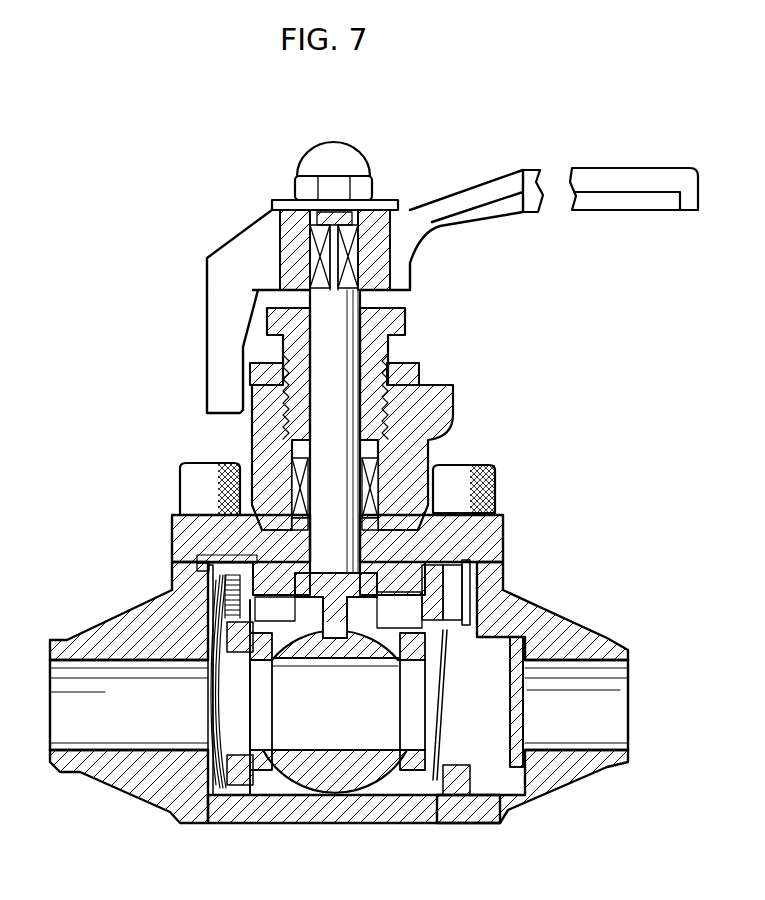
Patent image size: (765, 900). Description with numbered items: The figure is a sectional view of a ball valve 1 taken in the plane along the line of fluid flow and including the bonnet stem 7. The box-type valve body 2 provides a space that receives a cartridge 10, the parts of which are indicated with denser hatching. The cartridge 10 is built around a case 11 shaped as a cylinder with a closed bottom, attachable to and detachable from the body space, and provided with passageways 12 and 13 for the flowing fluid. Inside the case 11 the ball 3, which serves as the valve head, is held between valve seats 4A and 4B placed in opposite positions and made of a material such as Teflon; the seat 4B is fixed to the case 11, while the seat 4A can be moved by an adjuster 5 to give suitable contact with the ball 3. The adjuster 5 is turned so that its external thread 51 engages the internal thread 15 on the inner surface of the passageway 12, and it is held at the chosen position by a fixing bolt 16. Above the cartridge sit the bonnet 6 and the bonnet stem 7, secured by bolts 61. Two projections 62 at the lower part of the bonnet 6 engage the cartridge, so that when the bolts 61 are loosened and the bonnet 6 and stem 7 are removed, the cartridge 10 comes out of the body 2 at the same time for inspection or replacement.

The ball valve 1 is at (552, 455).
The valve body 2 is at (137, 785).
The ball 3 is at (328, 750).
The valve seat 4A is at (217, 695).
The valve seat 4B is at (412, 655).
The adjuster 5 is at (213, 727).
The bonnet 6 is at (495, 525).
The bonnet stem 7 is at (333, 303).
The cartridge 10 is at (400, 705).
The case 11 is at (447, 603).
The passageway 12 is at (237, 712).
The passageway 13 is at (435, 702).
The internal thread 15 is at (207, 663).
The fixing bolt 16 is at (228, 575).
The external thread 51 is at (248, 630).
The bolts 61 is at (210, 480).
The projections 62 is at (422, 605).